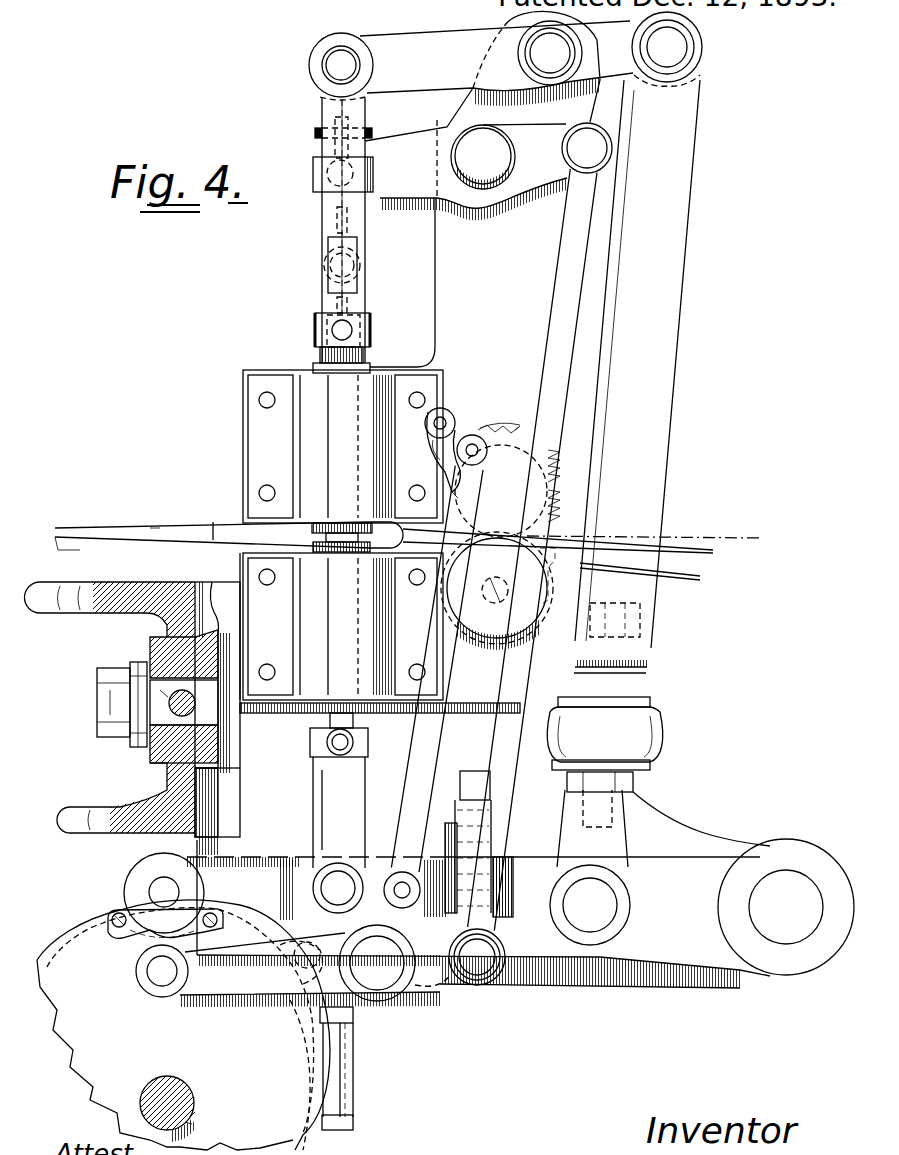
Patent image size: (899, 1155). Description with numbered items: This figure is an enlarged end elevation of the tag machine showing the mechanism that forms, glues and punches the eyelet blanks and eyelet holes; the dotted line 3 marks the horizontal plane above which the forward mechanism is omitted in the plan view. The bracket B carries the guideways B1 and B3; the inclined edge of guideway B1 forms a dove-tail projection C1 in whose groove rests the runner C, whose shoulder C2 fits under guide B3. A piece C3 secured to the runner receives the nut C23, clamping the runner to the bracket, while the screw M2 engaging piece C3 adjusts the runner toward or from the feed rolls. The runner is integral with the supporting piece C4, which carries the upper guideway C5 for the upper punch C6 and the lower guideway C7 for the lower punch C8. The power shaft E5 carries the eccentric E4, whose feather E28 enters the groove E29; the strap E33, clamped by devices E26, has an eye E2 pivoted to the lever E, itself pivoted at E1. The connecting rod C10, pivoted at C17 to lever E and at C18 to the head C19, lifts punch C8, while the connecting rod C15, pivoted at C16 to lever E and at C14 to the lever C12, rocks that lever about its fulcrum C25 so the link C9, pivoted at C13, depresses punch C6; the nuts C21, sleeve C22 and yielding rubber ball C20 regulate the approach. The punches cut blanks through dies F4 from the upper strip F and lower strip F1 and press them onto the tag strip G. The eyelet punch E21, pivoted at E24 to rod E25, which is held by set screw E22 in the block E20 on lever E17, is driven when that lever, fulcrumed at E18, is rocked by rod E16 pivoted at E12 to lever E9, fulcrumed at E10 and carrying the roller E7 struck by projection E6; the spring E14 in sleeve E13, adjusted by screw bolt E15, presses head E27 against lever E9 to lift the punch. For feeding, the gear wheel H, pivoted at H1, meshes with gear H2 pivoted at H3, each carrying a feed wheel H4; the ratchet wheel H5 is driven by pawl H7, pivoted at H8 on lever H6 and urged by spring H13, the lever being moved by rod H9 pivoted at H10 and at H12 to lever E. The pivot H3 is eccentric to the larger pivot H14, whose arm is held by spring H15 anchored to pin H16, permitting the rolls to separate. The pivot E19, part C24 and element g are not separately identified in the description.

The lever C12 is at (496, 63).
The pivot C13 is at (341, 198).
The pivot eye C25 is at (536, 66).
The pivot C14 is at (667, 49).
The connecting rod C15 is at (628, 473).
The pivot C16 is at (590, 905).
The pivot E1 is at (743, 883).
The supporting piece C4 is at (478, 564).
The lever E is at (224, 897).
The lever E17 is at (466, 154).
The fulcrum pivot E18 is at (483, 157).
The pivot E19 is at (587, 148).
The connecting rod E16 is at (532, 550).
The set screw E22 is at (318, 133).
The block E20 is at (314, 165).
The connecting link C9 is at (345, 222).
The connecting rod E25 is at (345, 226).
The pivot E24 is at (350, 266).
The eyelet-hole punch E21 is at (348, 305).
The pivot C18 is at (352, 330).
The punch head C19 is at (322, 324).
The upper punch C6 is at (325, 355).
The upper guideway C5 is at (320, 392).
The lower guideway C7 is at (380, 633).
The lower punch C8 is at (341, 552).
The connecting rod C10 is at (339, 812).
The pivot C17 is at (338, 888).
The upper paper strip F is at (384, 546).
The lower paper strip F1 is at (68, 549).
The die F4 is at (255, 518).
The tag strip G is at (209, 522).
The pin g is at (155, 516).
The dotted line 3 is at (656, 538).
The bracket B is at (128, 595).
The guideway B1 is at (210, 655).
The adjusting screw M2 is at (191, 706).
The sliding piece C3 is at (160, 703).
The nut C23 is at (122, 704).
The runner C is at (242, 740).
The dove-tail projection C1 is at (218, 590).
The shoulder C2 is at (205, 768).
The guideway B3 is at (183, 787).
The pawl pivot H8 is at (448, 410).
The pawl lever H6 is at (444, 439).
The ratchet wheel H5 is at (490, 428).
The gear wheel H is at (500, 420).
The pivot H3 is at (492, 588).
The spring H13 is at (432, 443).
The pawl H7 is at (460, 478).
The pivot H10 is at (472, 463).
The pivot H1 is at (501, 491).
The pin H16 is at (560, 460).
The spring H15 is at (553, 490).
The frictional feed wheel H4 is at (497, 591).
The eccentric pivot H14 is at (485, 600).
The gear wheel H2 is at (553, 602).
The connecting rod H9 is at (427, 760).
The pivot H12 is at (402, 884).
The nut C24 is at (642, 625).
The sleeve C22 is at (620, 685).
The rubber ball C20 is at (655, 722).
The nuts C21 is at (620, 779).
The spring E14 is at (468, 822).
The screw bolt E15 is at (466, 795).
The sleeve E13 is at (462, 840).
The fulcrum pivot E10 is at (377, 963).
The pivot E12 is at (477, 957).
The head E27 is at (462, 970).
The lever E9 is at (310, 970).
The roller E7 is at (150, 978).
The eye E2 is at (150, 878).
The projection E6 is at (160, 893).
The eccentric E4 is at (183, 1025).
The power shaft E5 is at (190, 1098).
The feather E28 is at (190, 1117).
The longitudinal groove E29 is at (185, 1122).
The clamping devices E26 is at (345, 1078).
The strap E33 is at (307, 1140).